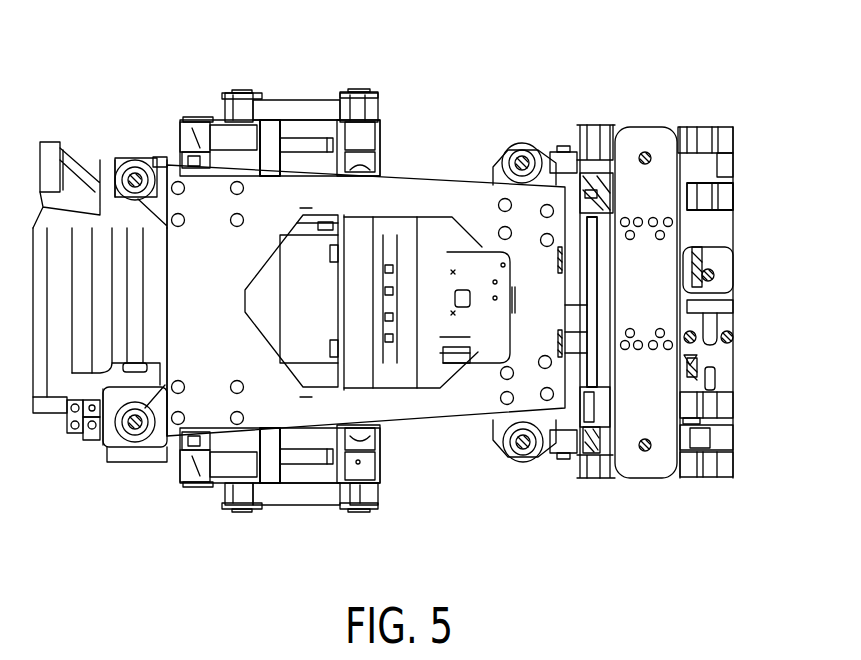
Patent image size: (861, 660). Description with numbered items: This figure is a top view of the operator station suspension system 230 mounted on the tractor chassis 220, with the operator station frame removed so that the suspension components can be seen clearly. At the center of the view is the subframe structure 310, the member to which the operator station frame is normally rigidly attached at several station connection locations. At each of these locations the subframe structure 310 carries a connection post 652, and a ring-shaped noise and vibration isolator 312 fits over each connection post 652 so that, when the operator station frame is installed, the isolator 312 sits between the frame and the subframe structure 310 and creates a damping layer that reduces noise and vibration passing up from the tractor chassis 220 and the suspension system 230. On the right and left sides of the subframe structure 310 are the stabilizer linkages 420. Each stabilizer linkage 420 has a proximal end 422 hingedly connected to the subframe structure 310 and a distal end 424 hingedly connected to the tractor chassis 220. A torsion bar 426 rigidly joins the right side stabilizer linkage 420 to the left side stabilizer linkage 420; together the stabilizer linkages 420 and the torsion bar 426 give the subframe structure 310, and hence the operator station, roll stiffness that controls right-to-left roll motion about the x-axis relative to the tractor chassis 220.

The tractor chassis 220 is at (766, 371).
The operator station suspension system 230 is at (426, 129).
The subframe structure 310 is at (410, 407).
The noise and vibration (NV) isolator 312 is at (130, 163).
The stabilizer linkage 420 is at (305, 108).
The proximal end 422 is at (245, 92).
The distal end 424 is at (355, 90).
The torsion bar 426 is at (273, 296).
The connection post 652 is at (133, 180).